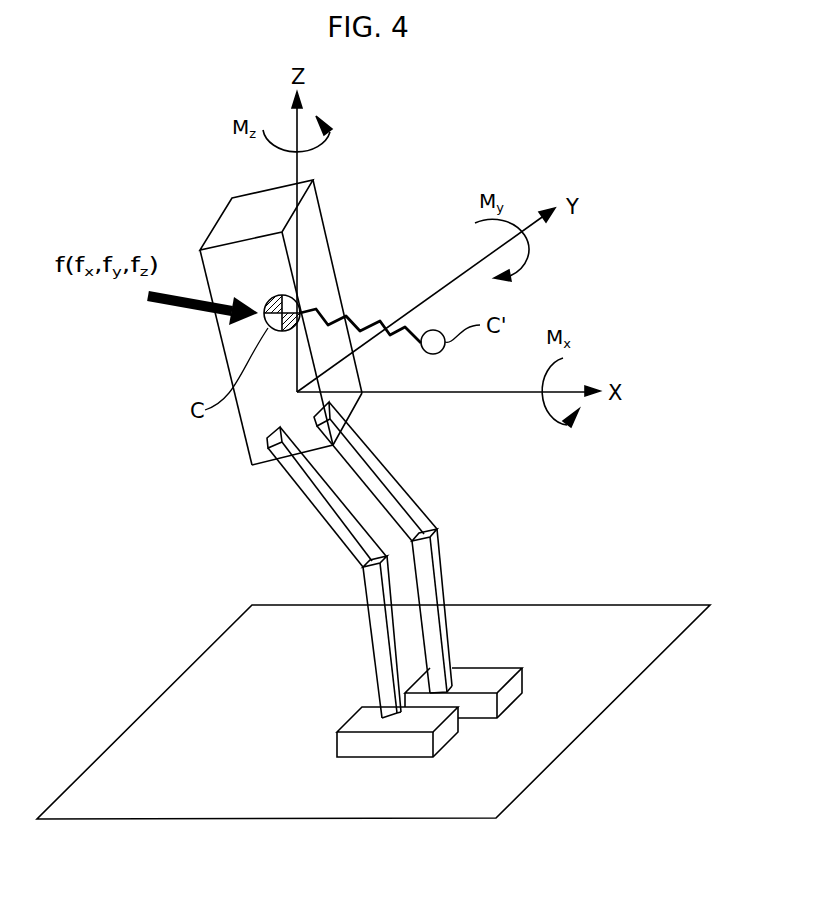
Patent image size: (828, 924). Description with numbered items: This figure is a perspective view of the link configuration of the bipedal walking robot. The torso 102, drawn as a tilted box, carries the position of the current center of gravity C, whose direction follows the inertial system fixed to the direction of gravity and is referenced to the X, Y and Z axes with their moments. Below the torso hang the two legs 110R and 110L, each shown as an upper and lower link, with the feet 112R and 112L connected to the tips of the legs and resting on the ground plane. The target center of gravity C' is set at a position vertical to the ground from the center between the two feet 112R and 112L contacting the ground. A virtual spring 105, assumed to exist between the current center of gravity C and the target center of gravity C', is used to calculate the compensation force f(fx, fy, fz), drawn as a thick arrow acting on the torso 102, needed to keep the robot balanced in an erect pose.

The torso 102 is at (223, 224).
The virtual spring 105 is at (372, 322).
The left leg 110L is at (385, 474).
The right leg 110R is at (318, 508).
The left foot 112L is at (500, 673).
The right foot 112R is at (362, 747).